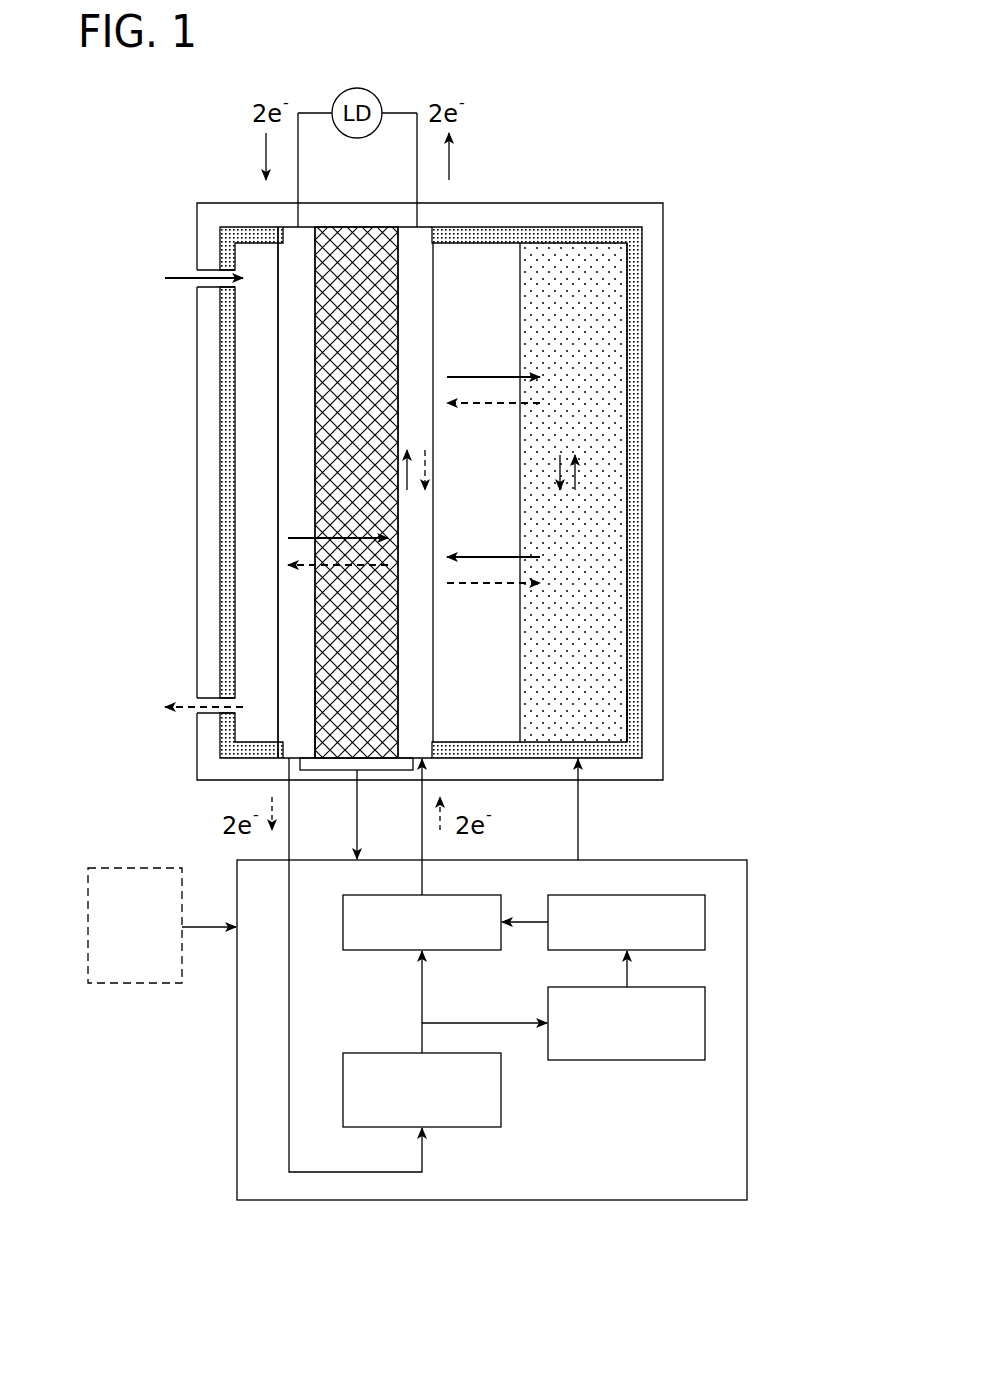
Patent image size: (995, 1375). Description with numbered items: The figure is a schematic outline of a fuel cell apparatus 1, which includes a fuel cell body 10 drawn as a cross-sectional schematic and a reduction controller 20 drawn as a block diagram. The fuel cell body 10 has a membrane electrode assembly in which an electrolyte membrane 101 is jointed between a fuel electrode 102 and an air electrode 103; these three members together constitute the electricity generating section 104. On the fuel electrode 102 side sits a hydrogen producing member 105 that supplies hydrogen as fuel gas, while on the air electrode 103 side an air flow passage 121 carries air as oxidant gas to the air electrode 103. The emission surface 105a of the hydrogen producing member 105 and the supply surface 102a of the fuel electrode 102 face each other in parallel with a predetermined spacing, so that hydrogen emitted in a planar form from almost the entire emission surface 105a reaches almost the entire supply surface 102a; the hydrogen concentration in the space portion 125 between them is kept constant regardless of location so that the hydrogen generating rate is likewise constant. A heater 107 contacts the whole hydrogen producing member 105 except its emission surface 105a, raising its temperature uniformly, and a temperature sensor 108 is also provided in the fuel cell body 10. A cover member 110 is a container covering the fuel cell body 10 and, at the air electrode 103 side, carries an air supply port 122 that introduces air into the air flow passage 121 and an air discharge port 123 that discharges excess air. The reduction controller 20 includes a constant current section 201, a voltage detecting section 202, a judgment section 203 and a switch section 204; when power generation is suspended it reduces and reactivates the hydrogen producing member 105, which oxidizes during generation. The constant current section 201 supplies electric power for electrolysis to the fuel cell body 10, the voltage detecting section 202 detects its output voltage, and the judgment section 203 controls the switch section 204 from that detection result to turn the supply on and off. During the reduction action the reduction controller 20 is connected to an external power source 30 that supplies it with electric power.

The fuel cell apparatus 1 is at (578, 122).
The fuel cell body 10 is at (405, 524).
The reduction controller 20 is at (492, 1050).
The power source 30 is at (162, 943).
The electrolyte membrane 101 is at (345, 360).
The fuel electrode 102 is at (320, 320).
The supply surface 102a is at (320, 665).
The air electrode 103 is at (300, 300).
The electricity generating section 104 is at (110, 280).
The hydrogen producing member 105 is at (605, 572).
The emission surface 105a is at (600, 685).
The heater 107 is at (640, 445).
The temperature sensor 108 is at (322, 770).
The cover member 110 is at (663, 233).
The air flow passage 121 is at (258, 482).
The air supply port 122 is at (197, 272).
The air discharge port 123 is at (197, 713).
The space portion 125 is at (500, 310).
The constant current section 201 is at (422, 1105).
The voltage detecting section 202 is at (627, 1037).
The judgment section 203 is at (627, 936).
The switch section 204 is at (422, 936).